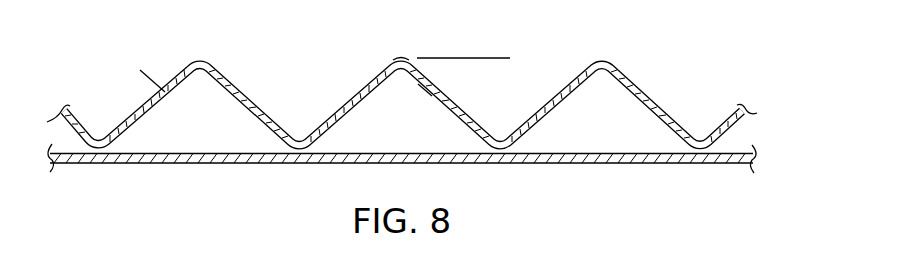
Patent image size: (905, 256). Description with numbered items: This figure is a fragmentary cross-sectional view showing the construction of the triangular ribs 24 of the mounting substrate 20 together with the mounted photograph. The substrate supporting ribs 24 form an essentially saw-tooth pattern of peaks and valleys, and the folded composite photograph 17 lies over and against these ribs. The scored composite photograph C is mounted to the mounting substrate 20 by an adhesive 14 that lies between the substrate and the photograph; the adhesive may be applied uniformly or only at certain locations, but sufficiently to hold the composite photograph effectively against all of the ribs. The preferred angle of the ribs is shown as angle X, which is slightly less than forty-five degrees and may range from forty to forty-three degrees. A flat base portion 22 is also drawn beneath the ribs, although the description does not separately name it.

The adhesive 14 is at (241, 87).
The folded composite photograph 17 is at (400, 57).
The mounting substrate 20 is at (402, 106).
The base sheet 22 is at (580, 164).
The triangular ribs 24 is at (425, 92).
The composite photograph C is at (146, 75).
The angle X is at (497, 66).